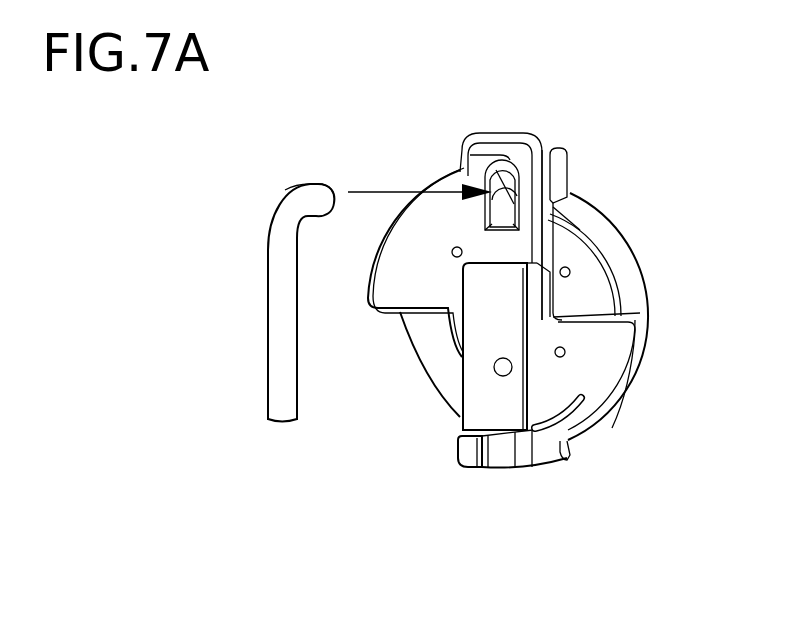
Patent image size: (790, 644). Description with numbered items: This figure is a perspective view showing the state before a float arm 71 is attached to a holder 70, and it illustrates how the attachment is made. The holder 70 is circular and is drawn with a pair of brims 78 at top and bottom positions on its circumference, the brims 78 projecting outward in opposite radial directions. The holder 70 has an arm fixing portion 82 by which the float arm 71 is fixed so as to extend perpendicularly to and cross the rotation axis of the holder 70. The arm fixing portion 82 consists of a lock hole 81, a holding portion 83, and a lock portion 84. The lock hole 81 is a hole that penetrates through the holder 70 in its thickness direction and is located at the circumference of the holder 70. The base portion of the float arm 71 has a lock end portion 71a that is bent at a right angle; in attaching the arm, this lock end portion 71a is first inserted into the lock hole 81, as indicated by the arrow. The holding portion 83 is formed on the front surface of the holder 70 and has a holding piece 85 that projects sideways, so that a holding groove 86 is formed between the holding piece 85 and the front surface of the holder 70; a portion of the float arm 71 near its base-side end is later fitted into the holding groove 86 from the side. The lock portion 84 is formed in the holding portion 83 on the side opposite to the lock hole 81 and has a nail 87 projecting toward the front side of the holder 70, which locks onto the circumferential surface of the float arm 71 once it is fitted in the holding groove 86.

The holder 70 is at (593, 198).
The float arm 71 is at (262, 348).
The lock end portion 71a is at (316, 182).
The brims 78 is at (563, 150).
The lock hole 81 is at (503, 170).
The arm fixing portion 82 is at (545, 333).
The holding portion 83 is at (513, 383).
The lock portion 84 is at (505, 468).
The holding piece 85 is at (470, 337).
The holding groove 86 is at (493, 263).
The nail 87 is at (467, 458).